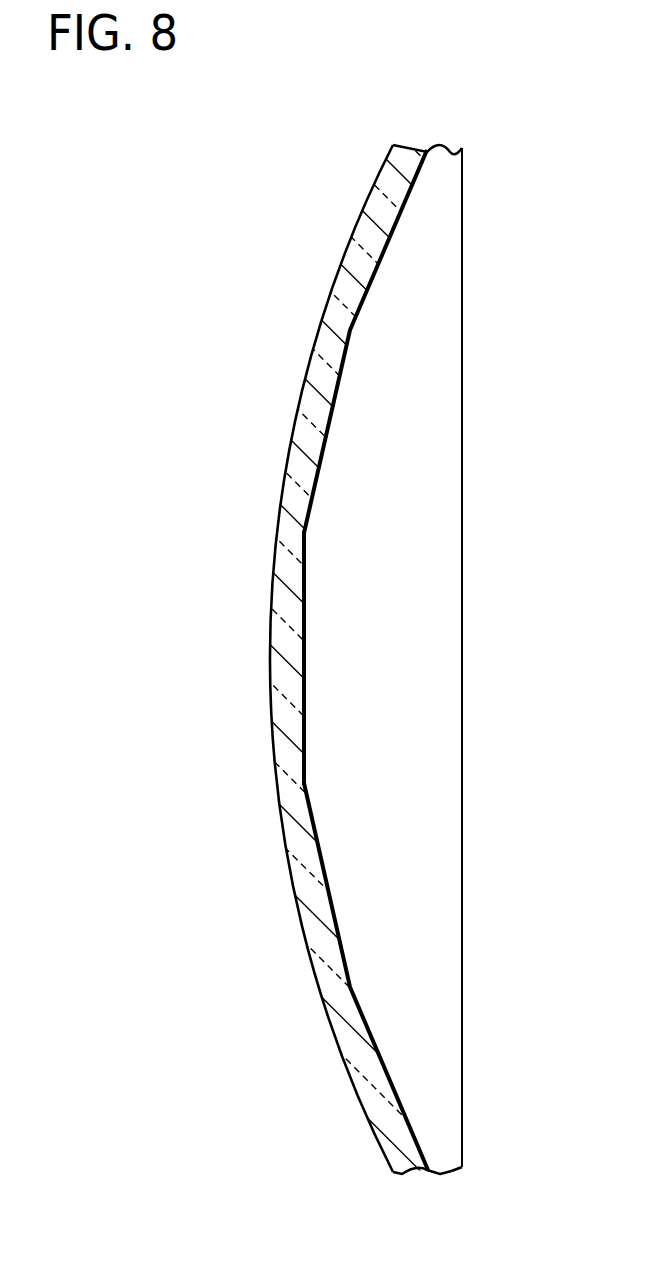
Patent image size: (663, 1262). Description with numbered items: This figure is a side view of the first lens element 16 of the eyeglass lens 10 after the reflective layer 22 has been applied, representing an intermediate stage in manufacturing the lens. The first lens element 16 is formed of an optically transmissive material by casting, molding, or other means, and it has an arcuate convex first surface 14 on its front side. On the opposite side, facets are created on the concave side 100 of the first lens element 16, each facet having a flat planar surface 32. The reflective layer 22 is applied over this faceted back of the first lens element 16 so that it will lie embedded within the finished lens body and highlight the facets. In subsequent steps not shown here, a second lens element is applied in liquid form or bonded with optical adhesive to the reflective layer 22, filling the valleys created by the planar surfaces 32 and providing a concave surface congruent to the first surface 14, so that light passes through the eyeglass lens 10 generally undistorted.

The eyeglass lens 10 is at (205, 208).
The first surface 14 is at (270, 592).
The first lens element 16 is at (348, 293).
The reflective layer 22 is at (345, 365).
The planar surface 32 is at (328, 862).
The concave side 100 is at (305, 712).